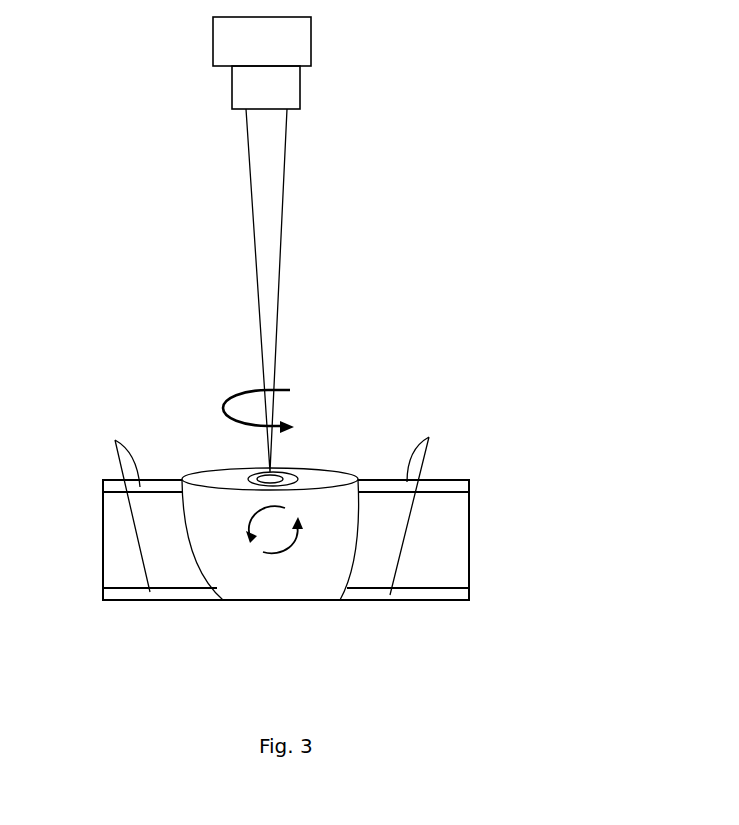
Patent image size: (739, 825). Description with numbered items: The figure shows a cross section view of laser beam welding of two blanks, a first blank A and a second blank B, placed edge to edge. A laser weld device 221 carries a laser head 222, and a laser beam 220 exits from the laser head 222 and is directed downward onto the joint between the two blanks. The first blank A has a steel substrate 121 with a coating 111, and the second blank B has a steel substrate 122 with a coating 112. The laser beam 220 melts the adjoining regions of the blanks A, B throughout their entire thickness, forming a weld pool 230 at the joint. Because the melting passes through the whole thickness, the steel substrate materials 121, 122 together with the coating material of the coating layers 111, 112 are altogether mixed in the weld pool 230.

The coating 111 is at (112, 502).
The coating 112 is at (437, 502).
The steel substrate 121 is at (110, 548).
The steel substrate 122 is at (460, 563).
The laser beam 220 is at (258, 235).
The laser weld device 221 is at (216, 38).
The laser head 222 is at (300, 90).
The weld pool 230 is at (220, 547).